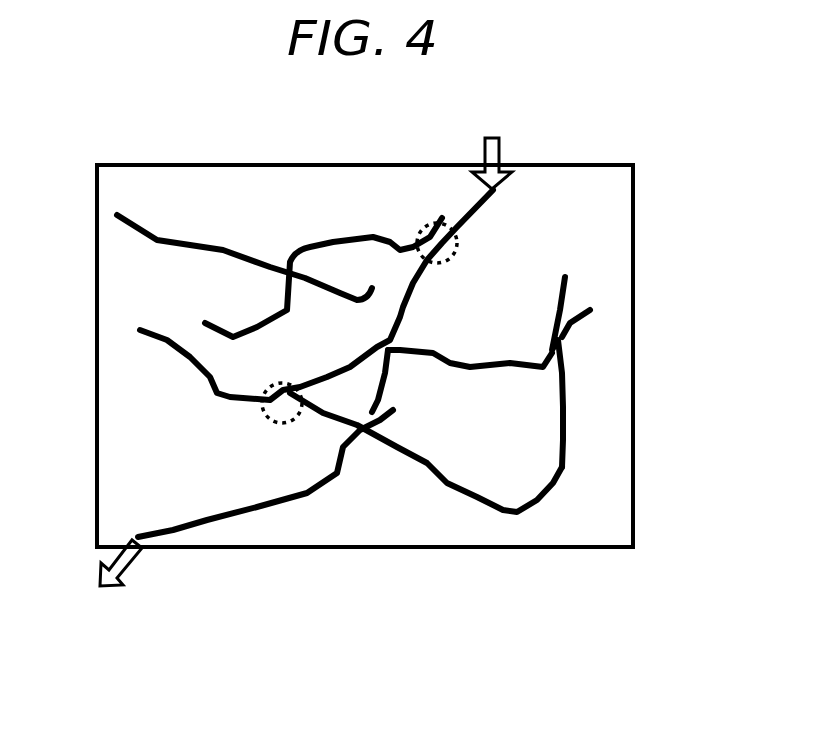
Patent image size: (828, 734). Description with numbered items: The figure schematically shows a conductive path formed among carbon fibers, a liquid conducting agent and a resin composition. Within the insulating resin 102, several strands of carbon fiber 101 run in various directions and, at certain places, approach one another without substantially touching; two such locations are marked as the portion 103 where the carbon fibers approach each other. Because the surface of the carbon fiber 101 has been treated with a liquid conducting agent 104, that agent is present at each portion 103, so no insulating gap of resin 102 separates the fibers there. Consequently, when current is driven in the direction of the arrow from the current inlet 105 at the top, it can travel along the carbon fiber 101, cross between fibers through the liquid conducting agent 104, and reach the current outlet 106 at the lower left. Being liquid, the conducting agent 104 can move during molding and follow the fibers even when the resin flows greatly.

The carbon fiber 101 is at (455, 488).
The resin 102 is at (257, 166).
The portion where the carbon fibers approach each other 103 is at (458, 245).
The liquid conducting agent 104 is at (567, 475).
The current inlet 105 is at (492, 147).
The current outlet 106 is at (117, 583).